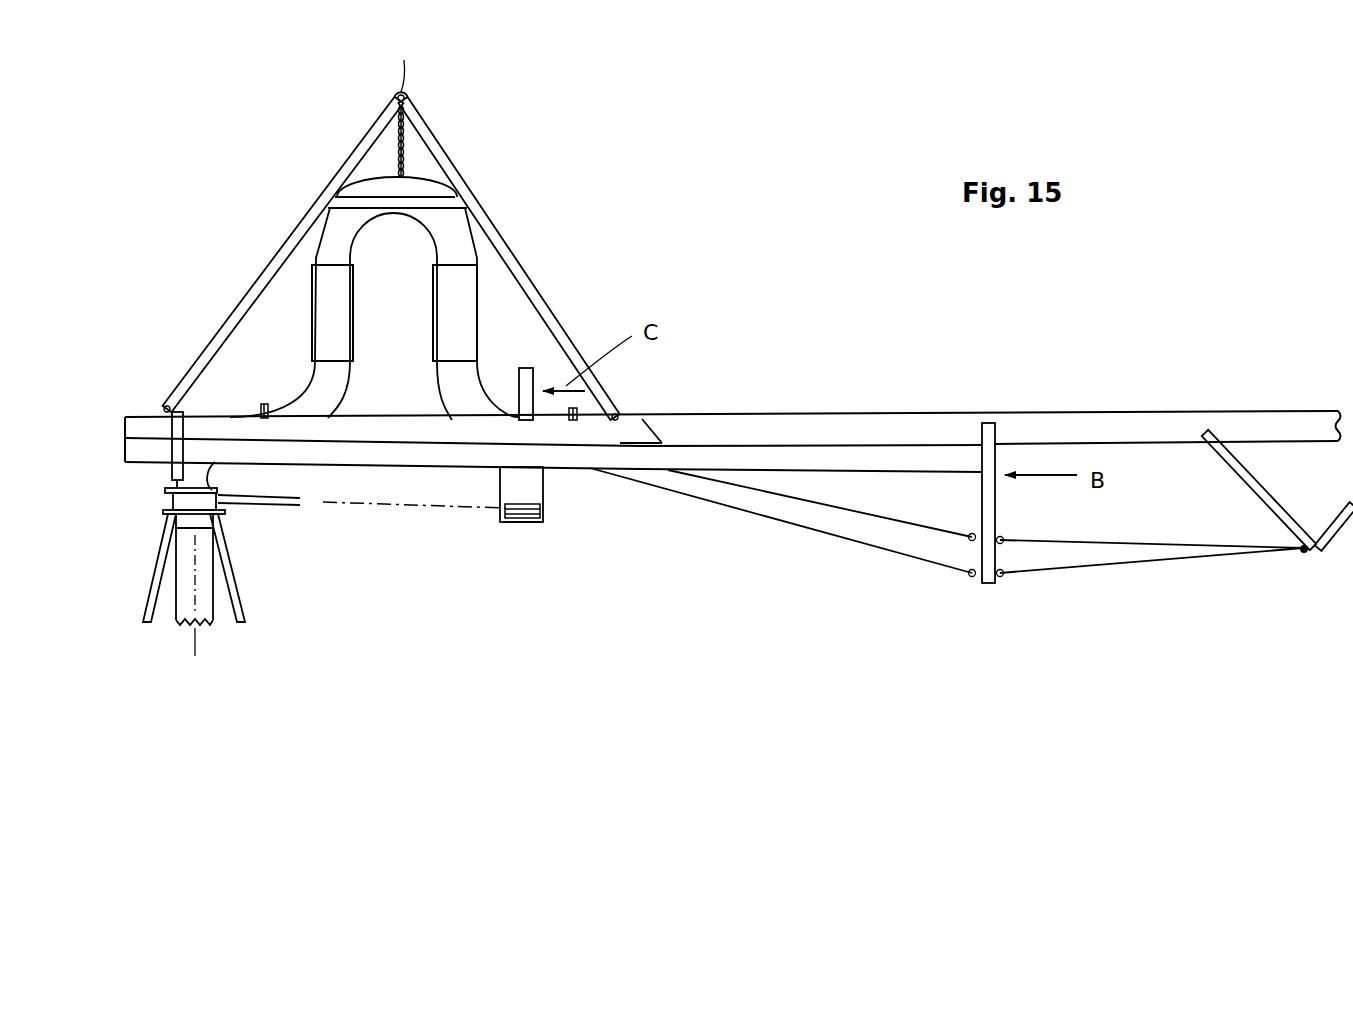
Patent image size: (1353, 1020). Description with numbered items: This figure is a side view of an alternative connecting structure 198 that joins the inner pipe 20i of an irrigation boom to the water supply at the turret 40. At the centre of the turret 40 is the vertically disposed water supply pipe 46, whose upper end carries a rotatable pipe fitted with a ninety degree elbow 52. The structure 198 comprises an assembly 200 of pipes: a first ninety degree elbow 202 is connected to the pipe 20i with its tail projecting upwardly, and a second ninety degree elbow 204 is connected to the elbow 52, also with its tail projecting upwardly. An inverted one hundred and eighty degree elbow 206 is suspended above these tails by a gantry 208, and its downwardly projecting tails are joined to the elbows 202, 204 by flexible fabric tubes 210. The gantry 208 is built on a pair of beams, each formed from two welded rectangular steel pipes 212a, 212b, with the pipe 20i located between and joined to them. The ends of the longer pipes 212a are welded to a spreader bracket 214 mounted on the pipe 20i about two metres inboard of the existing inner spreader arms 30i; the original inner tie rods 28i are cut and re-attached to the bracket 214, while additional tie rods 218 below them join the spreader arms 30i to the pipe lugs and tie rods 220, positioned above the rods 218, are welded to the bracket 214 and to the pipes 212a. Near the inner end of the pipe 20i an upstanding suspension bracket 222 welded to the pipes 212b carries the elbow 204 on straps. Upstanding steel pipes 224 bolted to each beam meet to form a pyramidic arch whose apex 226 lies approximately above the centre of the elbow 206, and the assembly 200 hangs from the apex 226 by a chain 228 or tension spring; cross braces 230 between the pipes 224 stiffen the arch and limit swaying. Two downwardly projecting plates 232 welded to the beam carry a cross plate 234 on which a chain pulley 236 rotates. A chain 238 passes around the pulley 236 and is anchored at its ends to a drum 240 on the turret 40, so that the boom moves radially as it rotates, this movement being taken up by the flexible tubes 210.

The inner pipe 20i is at (1033, 423).
The steel pipe 212a is at (768, 457).
The steel pipe 212b is at (641, 428).
The alternative structure 198 is at (522, 150).
The gantry 208 is at (285, 237).
The upstanding steel pipes 224 is at (498, 233).
The apex 226 is at (411, 62).
The chain 228 is at (397, 127).
The assembly of pipes 200 is at (428, 176).
The 180° elbow 206 is at (367, 187).
The cross braces 230 is at (462, 207).
The first 90° elbow 202 is at (330, 393).
The flexible tubes 210 is at (312, 283).
The second 90° elbow 204 is at (478, 377).
The 90° elbow 52 is at (238, 413).
The suspension bracket 222 is at (533, 382).
The drum 240 is at (165, 491).
The turret 40 is at (230, 575).
The water supply pipe 46 is at (193, 641).
The chain 238 is at (300, 505).
The downwardly projecting plates 232 is at (545, 488).
The chain pulley 236 is at (505, 510).
The cross plate 234 is at (522, 523).
The tie rods 220 is at (755, 489).
The tie rods 218 is at (805, 532).
The spreader bracket 214 is at (988, 511).
The inner tie rods 28i is at (1160, 546).
The inner spreader arms 30i is at (1247, 480).